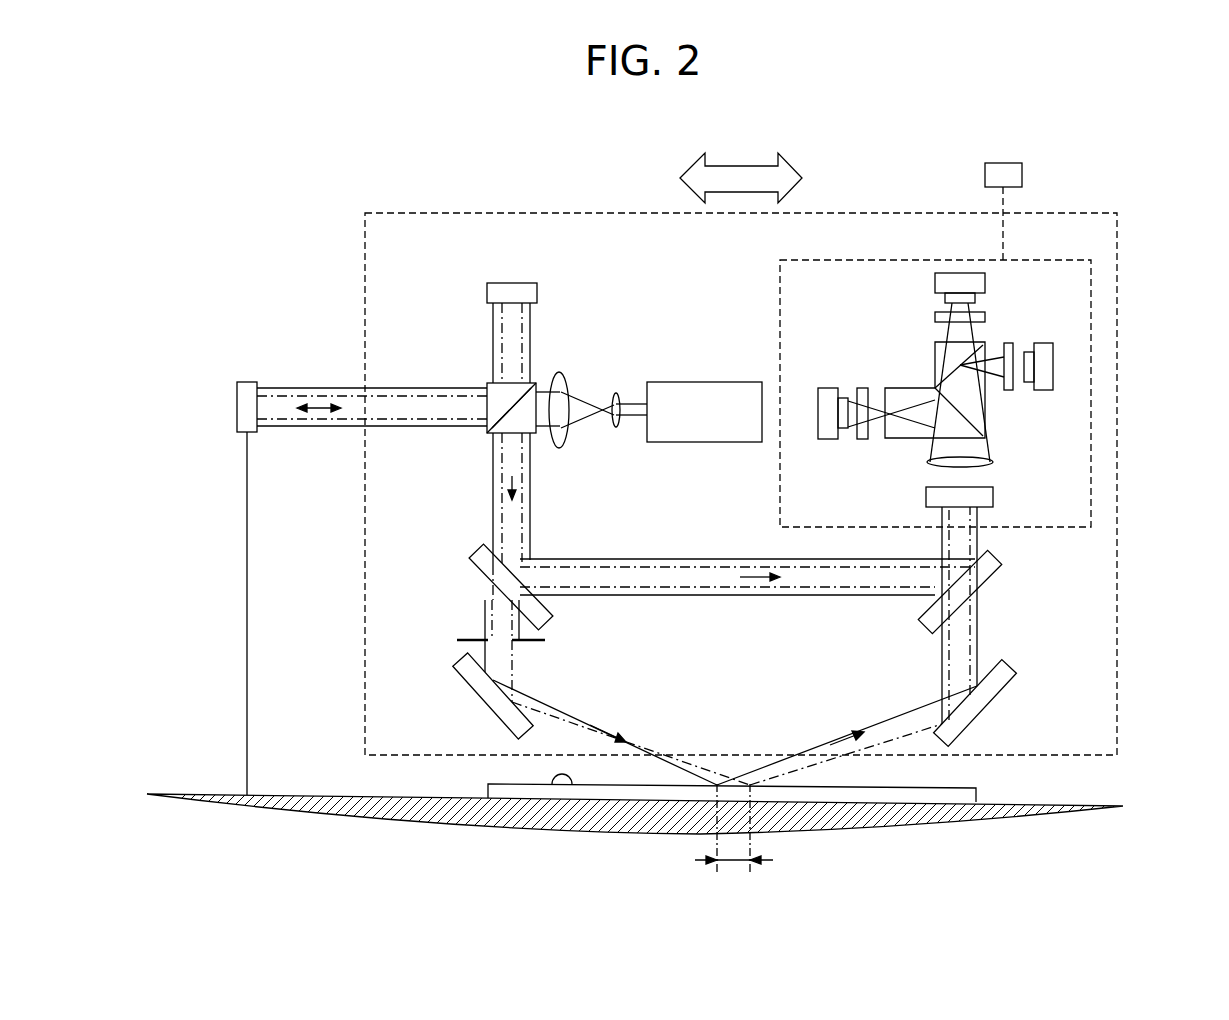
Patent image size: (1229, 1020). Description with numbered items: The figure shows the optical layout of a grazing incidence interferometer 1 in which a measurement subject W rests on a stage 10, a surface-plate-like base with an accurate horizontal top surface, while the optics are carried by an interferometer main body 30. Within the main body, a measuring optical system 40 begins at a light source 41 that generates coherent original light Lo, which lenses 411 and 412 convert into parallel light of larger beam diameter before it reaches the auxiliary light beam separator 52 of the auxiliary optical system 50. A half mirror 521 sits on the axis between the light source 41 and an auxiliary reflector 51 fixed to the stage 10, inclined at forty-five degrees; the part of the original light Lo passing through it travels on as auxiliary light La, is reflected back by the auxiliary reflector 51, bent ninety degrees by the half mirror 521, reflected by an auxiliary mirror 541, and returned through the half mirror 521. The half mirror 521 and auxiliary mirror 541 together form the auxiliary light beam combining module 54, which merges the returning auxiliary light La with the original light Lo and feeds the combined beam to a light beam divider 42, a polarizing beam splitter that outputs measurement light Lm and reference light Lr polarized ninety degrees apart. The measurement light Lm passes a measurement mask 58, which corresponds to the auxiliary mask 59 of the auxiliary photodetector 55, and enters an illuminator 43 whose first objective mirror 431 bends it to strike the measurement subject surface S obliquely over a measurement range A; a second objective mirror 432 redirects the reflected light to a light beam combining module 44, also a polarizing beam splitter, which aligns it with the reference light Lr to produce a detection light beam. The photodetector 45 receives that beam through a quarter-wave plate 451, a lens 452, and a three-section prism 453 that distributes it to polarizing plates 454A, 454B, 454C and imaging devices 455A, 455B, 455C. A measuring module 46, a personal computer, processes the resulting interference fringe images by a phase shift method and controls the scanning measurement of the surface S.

The grazing incidence interferometer 1 is at (258, 133).
The stage 10 is at (207, 792).
The interferometer main body 30 is at (1118, 639).
The measuring optical system 40 is at (843, 254).
The light source 41 is at (700, 380).
The lens 411 is at (618, 388).
The lens 412 is at (565, 375).
The light beam divider 42 is at (478, 553).
The illuminator 43 is at (450, 699).
The first objective mirror 431 is at (480, 702).
The second objective mirror 432 is at (988, 705).
The light beam combining module 44 is at (1000, 558).
The photodetector 45 is at (1091, 343).
The quarter-wave plate 451 is at (993, 496).
The lens 452 is at (985, 460).
The three-section prism 453 is at (912, 388).
The polarizing plate 454A is at (862, 388).
The polarizing plate 454B is at (985, 316).
The polarizing plate 454C is at (1008, 390).
The imaging device 455A is at (818, 408).
The imaging device 455B is at (985, 281).
The imaging device 455C is at (1043, 390).
The measuring module 46 is at (1023, 173).
The auxiliary optical system 50 is at (397, 248).
The auxiliary reflector 51 is at (247, 382).
The auxiliary light beam separator 52 is at (454, 431).
The auxiliary light beam combining module 54 is at (488, 432).
The half mirror 521 is at (507, 407).
The auxiliary mirror 541 is at (487, 291).
The auxiliary photodetector 55 is at (505, 263).
The measurement mask 58 is at (530, 643).
The auxiliary mask 59 is at (508, 303).
The measurement subject W is at (520, 790).
The measurement subject surface S is at (566, 788).
The measurement range A is at (734, 839).
The auxiliary light La is at (340, 398).
The original light Lo is at (540, 390).
The reference light Lr is at (640, 565).
The measurement light Lm is at (505, 668).